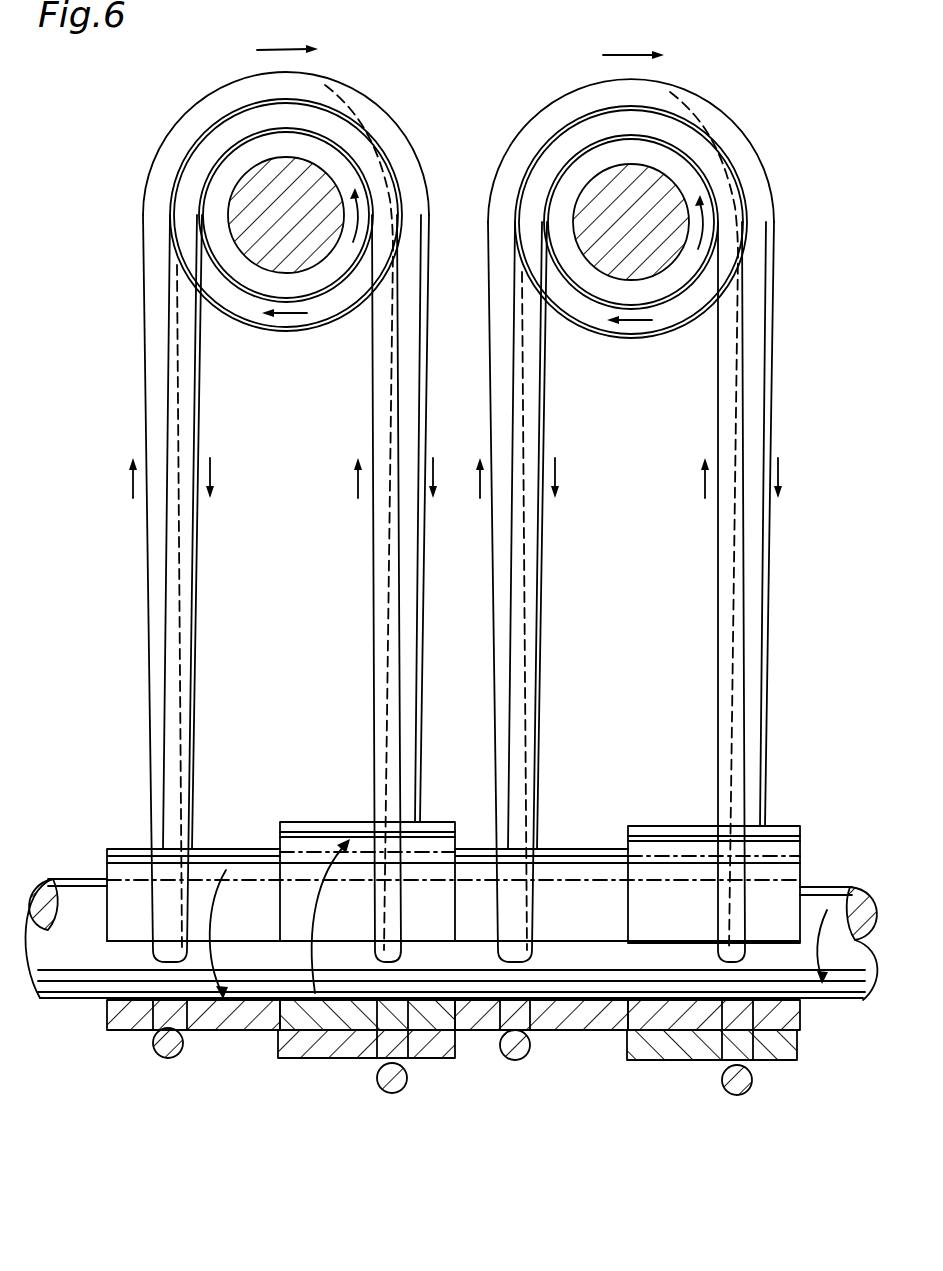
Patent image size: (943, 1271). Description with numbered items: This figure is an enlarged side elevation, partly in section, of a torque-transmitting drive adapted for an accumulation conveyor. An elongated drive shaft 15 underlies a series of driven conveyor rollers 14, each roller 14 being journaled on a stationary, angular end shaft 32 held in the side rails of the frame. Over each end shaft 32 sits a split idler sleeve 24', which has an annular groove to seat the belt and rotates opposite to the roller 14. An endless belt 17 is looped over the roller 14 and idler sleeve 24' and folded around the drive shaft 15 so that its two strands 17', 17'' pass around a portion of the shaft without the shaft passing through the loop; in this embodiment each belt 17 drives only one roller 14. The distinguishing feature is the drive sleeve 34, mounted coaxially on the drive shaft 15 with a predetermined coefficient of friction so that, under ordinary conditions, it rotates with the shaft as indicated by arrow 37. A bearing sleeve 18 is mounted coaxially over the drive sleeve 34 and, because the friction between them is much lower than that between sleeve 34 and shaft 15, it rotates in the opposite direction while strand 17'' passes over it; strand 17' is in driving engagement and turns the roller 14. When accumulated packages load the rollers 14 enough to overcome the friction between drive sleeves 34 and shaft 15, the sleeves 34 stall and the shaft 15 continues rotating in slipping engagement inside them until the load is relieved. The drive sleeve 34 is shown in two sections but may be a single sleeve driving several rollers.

The driven conveyor roller 14 is at (287, 333).
The drive shaft 15 is at (845, 972).
The endless belt 17 is at (458, 566).
The belt strand 17' is at (345, 1076).
The belt strand 17'' is at (579, 1105).
The bearing sleeve 18 is at (307, 835).
The idler sleeve 24' is at (458, 203).
The end shaft 32 is at (252, 253).
The drive sleeve 34 is at (220, 863).
The arrow indicating direction of rotation of drive sleeve 37 is at (210, 955).